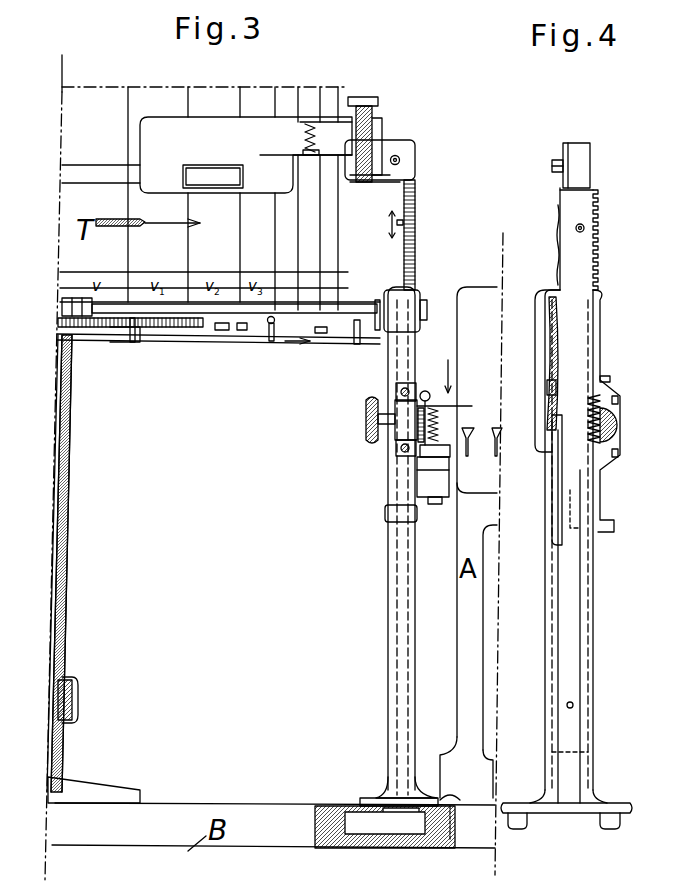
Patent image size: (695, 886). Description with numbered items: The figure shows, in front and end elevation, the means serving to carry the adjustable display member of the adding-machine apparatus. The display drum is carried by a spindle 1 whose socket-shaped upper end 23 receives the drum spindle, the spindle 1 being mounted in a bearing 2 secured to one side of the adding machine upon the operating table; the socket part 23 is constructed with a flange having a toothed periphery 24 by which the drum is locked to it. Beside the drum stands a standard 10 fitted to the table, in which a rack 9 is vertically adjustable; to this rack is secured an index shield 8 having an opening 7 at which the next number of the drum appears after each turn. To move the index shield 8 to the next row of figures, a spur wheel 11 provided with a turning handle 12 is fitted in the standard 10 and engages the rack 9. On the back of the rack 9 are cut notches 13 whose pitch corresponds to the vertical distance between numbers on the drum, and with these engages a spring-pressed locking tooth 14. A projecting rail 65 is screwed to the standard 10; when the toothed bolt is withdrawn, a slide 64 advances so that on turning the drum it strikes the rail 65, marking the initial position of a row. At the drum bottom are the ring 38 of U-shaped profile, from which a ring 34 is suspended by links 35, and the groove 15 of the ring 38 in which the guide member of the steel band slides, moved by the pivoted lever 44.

In FIG. 3, the spindle 1 is at (68, 410).
In FIG. 3, the bearing 2 is at (78, 706).
In FIG. 3, the opening 7 is at (213, 176).
In FIG. 3, the index shield 8 is at (220, 158).
In FIG. 3, the rack 9 is at (416, 210).
In FIG. 4, the rack 9 is at (599, 222).
In FIG. 3, the standard 10 is at (405, 612).
In FIG. 4, the standard 10 is at (546, 598).
In FIG. 3, the spur wheel 11 is at (396, 444).
In FIG. 4, the spur wheel 11 is at (621, 430).
In FIG. 3, the turning handle 12 is at (366, 418).
In FIG. 4, the notches 13 is at (558, 245).
In FIG. 4, the locking tooth 14 is at (547, 387).
In FIG. 4, the groove 15 is at (552, 422).
In FIG. 3, the socket-shaped upper end 23 is at (60, 328).
In FIG. 3, the toothed periphery 24 is at (196, 342).
In FIG. 3, the ring 34 is at (298, 353).
In FIG. 3, the links 35 is at (270, 338).
In FIG. 3, the ring 38 is at (348, 332).
In FIG. 3, the pivoted lever 44 is at (66, 302).
In FIG. 3, the slide 64 is at (378, 302).
In FIG. 3, the projecting rail 65 is at (393, 290).
In FIG. 4, the projecting rail 65 is at (548, 322).